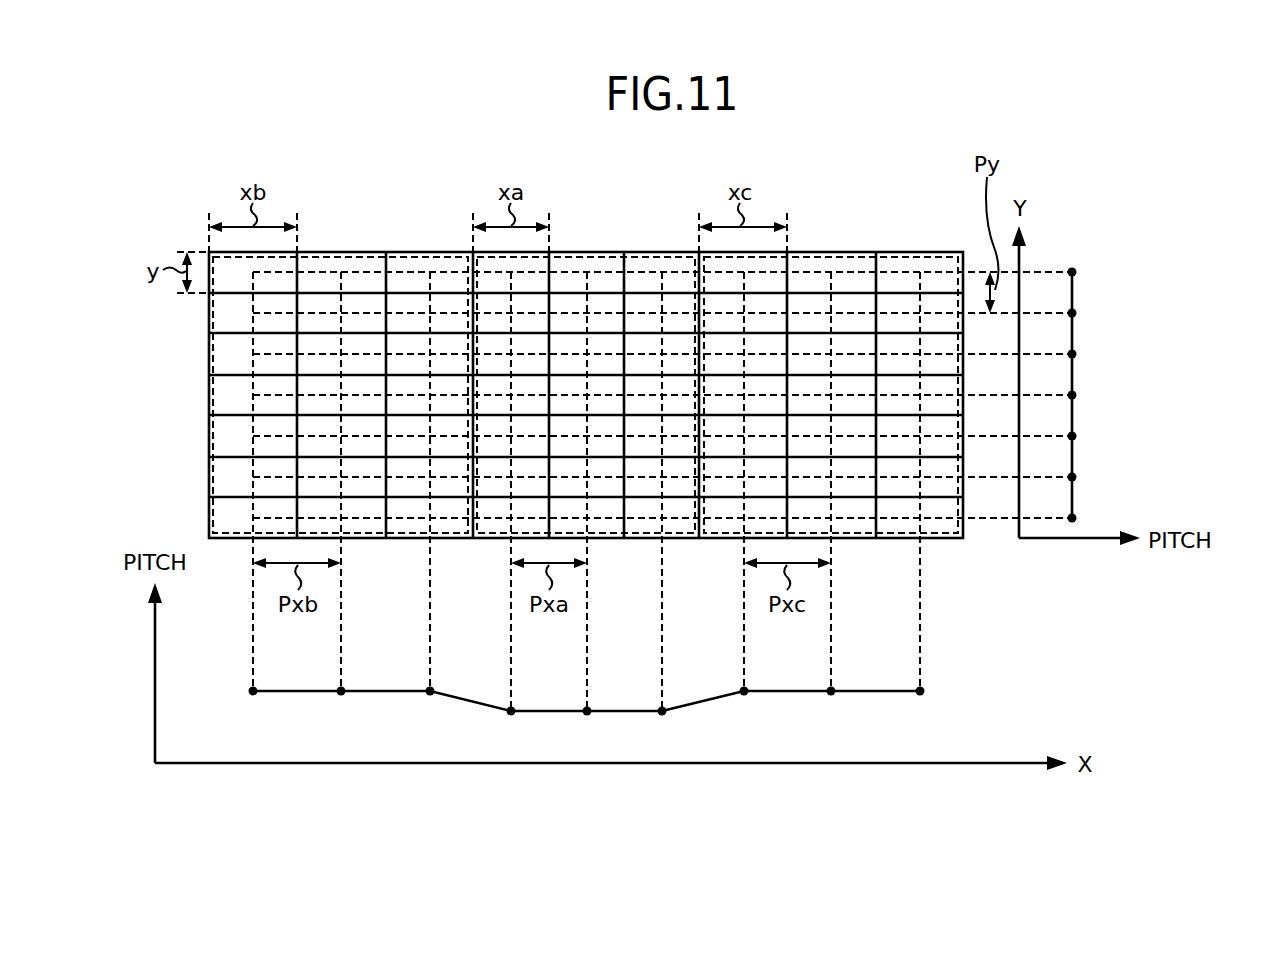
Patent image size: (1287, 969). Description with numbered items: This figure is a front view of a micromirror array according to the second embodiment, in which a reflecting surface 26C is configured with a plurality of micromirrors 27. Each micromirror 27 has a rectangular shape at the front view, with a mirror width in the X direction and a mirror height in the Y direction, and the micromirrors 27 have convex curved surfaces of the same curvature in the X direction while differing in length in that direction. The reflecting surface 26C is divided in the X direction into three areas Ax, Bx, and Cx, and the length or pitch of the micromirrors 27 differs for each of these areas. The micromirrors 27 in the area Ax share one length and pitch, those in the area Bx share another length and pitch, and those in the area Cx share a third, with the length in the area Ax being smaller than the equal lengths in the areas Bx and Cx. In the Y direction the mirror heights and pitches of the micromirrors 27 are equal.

The reflecting surface 26C is at (655, 212).
The micromirror 27 is at (277, 265).
The area Bx is at (360, 257).
The area Ax is at (567, 257).
The area Cx is at (818, 257).